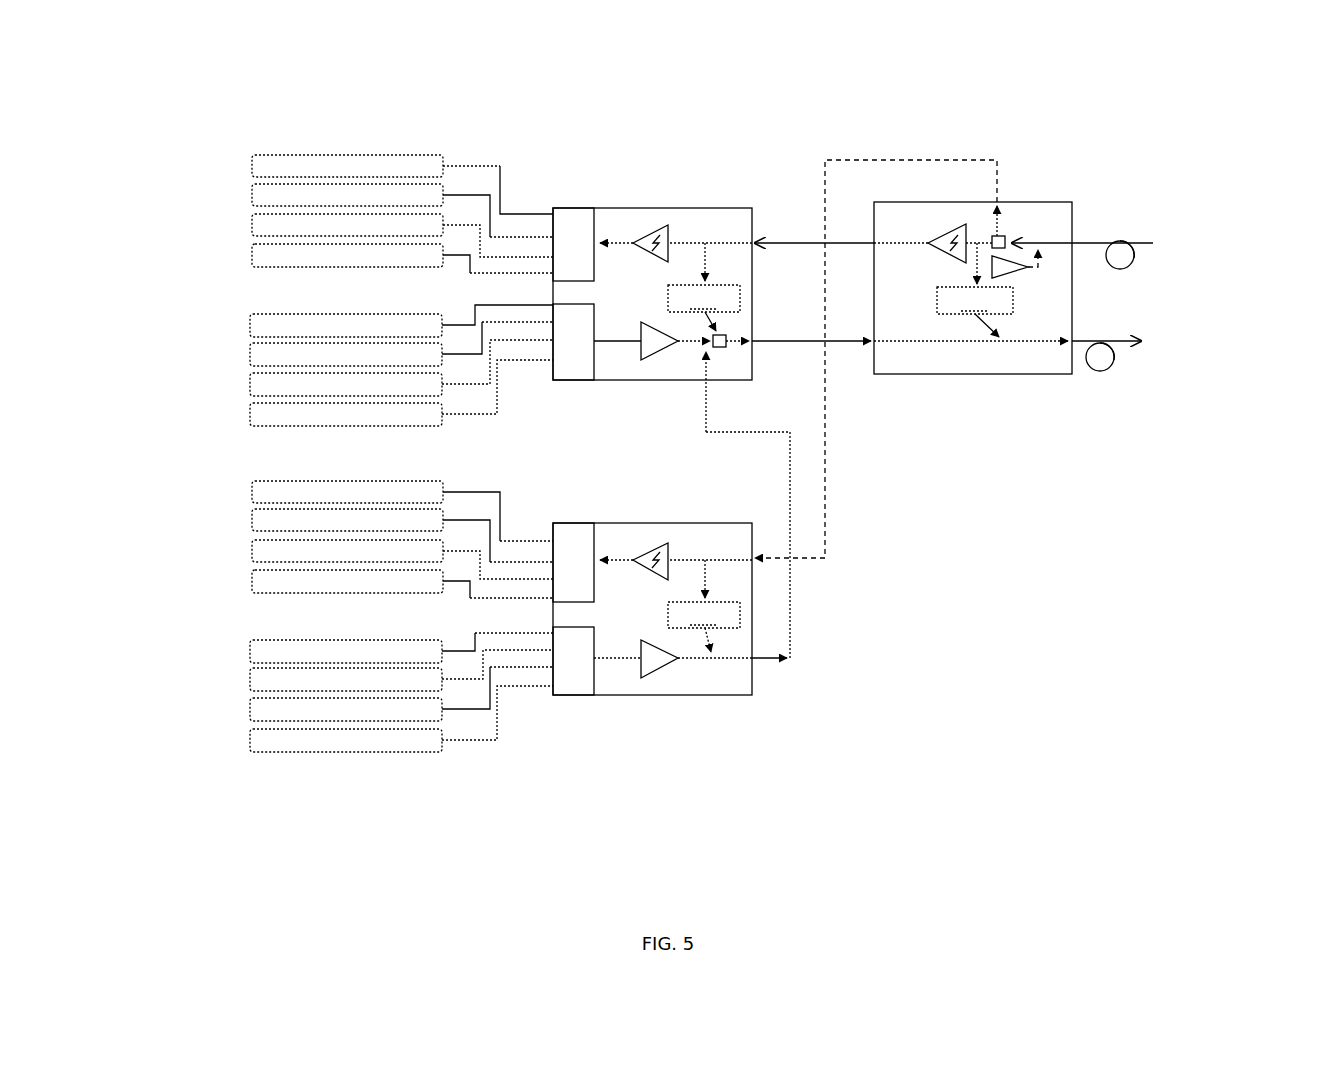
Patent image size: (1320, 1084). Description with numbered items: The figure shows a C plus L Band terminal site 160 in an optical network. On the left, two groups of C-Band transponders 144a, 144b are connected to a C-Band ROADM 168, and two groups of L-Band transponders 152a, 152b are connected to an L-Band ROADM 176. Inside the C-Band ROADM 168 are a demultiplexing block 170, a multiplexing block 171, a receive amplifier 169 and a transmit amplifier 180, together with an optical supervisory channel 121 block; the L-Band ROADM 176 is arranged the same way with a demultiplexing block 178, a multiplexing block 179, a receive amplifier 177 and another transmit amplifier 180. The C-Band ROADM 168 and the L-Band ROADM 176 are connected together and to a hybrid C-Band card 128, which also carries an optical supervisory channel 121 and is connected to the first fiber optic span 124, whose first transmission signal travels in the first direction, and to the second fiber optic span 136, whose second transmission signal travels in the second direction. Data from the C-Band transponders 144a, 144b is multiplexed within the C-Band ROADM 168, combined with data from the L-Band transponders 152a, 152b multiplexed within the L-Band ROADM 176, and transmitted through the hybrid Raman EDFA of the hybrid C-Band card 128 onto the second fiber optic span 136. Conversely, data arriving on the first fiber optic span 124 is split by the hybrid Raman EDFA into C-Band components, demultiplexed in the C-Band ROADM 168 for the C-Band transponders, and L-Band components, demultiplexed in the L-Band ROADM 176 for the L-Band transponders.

The C+L Band terminal site 160 is at (1208, 74).
The C-band transponders group a 144a is at (245, 156).
The C-band transponders group b 144b is at (245, 315).
The L-band transponders group a 152a is at (245, 482).
The L-band transponders group b 152b is at (245, 641).
The C-Band ROADM 168 is at (733, 207).
The C-band receive amplifier 169 is at (664, 225).
The C-band demultiplexer 170 is at (575, 207).
The C-band multiplexer 171 is at (572, 381).
The L-Band ROADM 176 is at (732, 696).
The L-band receive amplifier 177 is at (665, 543).
The L-band demultiplexer 178 is at (578, 522).
The L-band multiplexer 179 is at (572, 696).
The transmit amplifier 180 is at (657, 360).
The optical supervisory channel 121 is at (840, 456).
The hybrid C-Band card 128 is at (1029, 202).
The first fiber optic span 124 is at (1125, 237).
The second fiber optic span 136 is at (1105, 370).